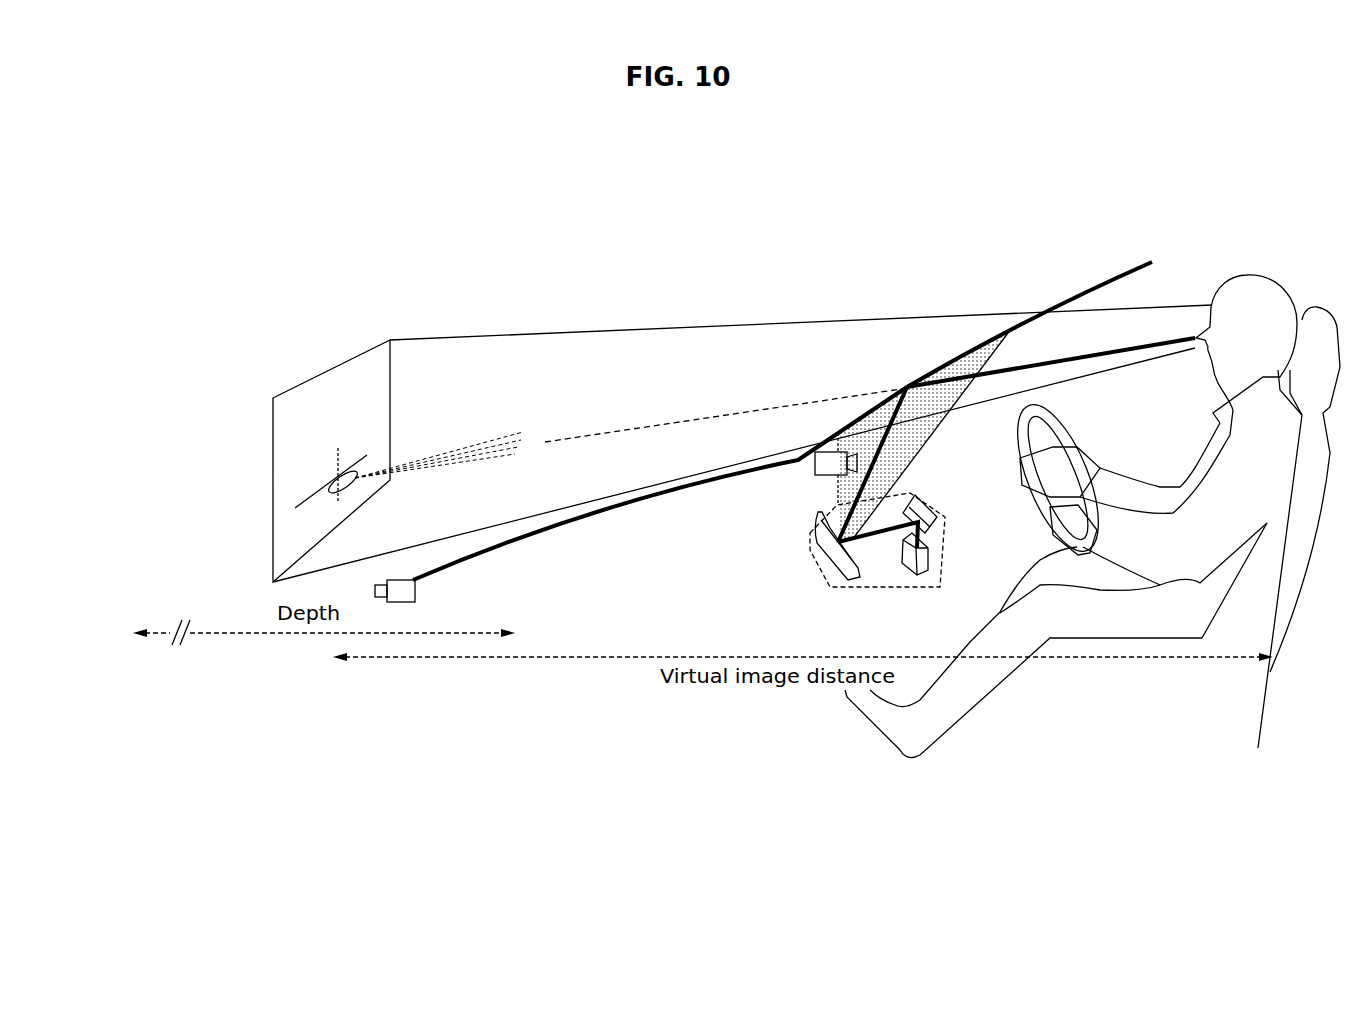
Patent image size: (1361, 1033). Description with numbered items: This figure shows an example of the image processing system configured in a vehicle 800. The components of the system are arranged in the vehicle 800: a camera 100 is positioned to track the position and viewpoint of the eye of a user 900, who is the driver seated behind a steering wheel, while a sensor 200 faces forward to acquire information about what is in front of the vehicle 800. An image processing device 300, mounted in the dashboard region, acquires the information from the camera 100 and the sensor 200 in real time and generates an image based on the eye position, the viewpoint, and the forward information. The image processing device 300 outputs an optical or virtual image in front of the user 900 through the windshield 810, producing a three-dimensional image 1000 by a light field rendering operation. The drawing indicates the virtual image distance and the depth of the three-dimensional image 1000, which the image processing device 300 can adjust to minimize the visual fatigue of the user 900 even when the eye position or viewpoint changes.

The 3D image 1000 is at (122, 513).
The sensor 200 is at (641, 495).
The camera 100 is at (812, 470).
The image processing device 300 is at (885, 569).
The windshield 810 is at (947, 365).
The vehicle 800 is at (1085, 292).
The user 900 is at (1253, 273).